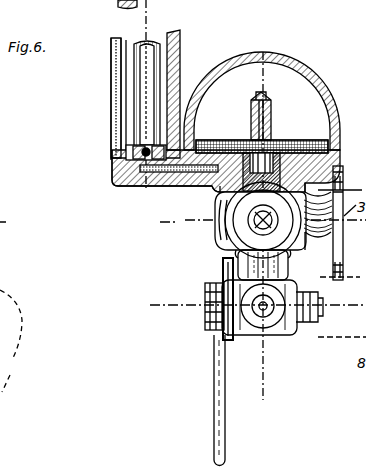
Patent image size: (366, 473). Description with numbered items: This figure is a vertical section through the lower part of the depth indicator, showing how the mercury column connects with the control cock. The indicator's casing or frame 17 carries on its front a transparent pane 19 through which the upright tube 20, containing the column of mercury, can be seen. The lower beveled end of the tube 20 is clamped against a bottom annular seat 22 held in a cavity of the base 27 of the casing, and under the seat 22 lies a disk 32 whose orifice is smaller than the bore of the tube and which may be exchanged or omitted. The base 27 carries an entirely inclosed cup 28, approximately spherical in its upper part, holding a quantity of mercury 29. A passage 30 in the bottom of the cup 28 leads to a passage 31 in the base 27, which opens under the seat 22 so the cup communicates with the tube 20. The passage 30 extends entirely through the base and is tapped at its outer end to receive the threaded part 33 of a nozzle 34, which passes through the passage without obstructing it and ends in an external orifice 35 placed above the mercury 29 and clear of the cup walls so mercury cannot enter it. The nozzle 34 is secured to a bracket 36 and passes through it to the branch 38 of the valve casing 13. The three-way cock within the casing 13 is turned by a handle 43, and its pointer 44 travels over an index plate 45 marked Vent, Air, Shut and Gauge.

The valve casing 13 is at (250, 340).
The casing or frame 17 is at (181, 51).
The transparent pane 19 is at (120, 69).
The upright tube 20 is at (146, 93).
The bottom annular seat 22 is at (113, 152).
The base 27 is at (190, 184).
The cup 28 is at (300, 84).
The mercury 29 is at (303, 135).
The passage 30 is at (318, 168).
The passage 31 is at (214, 187).
The disk 32 is at (116, 177).
The threaded part 33 is at (224, 208).
The nozzle 34 is at (272, 100).
The external orifice 35 is at (252, 97).
The bracket 36 is at (217, 245).
The branch 38 is at (288, 264).
The handle 43 is at (216, 413).
The indicator or pointer 44 is at (212, 278).
The index plate 45 is at (226, 272).